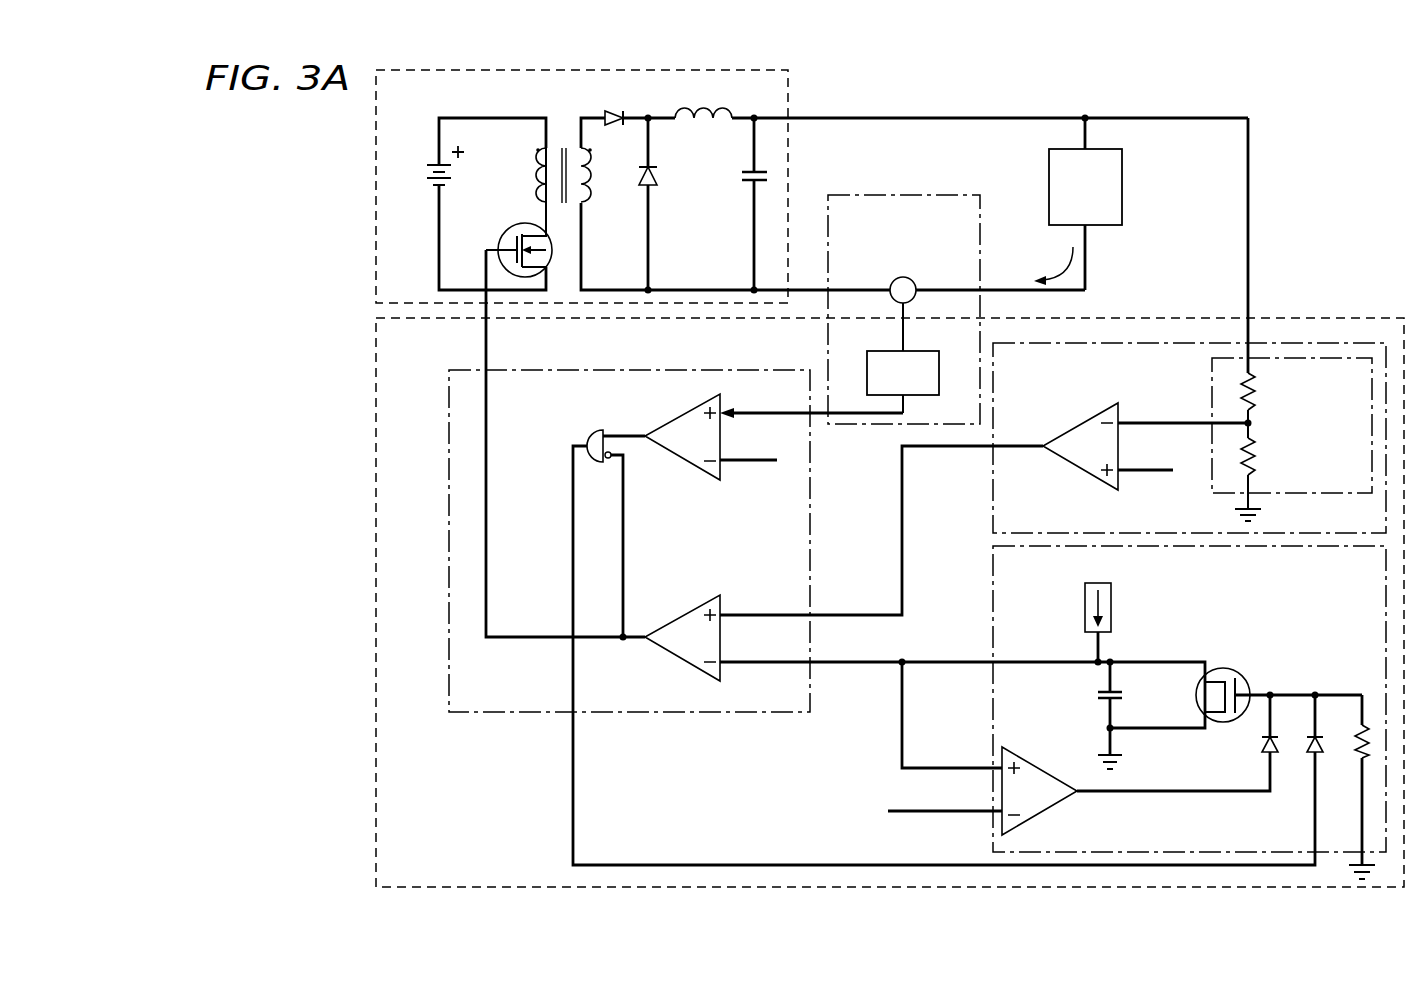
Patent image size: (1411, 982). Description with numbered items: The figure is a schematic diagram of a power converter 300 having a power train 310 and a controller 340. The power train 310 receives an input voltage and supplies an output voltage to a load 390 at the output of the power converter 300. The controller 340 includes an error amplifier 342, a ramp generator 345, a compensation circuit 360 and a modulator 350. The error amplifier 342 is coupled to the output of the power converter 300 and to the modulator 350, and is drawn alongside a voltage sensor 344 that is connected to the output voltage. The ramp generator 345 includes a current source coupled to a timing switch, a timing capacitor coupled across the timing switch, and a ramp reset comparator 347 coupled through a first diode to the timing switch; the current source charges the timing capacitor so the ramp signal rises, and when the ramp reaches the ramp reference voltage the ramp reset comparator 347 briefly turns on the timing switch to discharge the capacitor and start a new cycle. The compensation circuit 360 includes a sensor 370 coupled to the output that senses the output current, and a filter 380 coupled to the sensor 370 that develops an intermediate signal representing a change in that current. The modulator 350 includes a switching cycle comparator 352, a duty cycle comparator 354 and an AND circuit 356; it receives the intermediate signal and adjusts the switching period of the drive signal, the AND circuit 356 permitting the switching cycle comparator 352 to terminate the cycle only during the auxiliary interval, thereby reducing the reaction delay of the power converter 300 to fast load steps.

The power converter 300 is at (319, 152).
The power train 310 is at (789, 92).
The controller 340 is at (375, 858).
The error amplifier 342 is at (1040, 344).
The voltage sensor 344 is at (1345, 494).
The ramp generator 345 is at (993, 563).
The ramp reset comparator 347 is at (1027, 748).
The modulator 350 is at (449, 690).
The switching cycle comparator 352 is at (684, 464).
The duty cycle comparator 354 is at (687, 605).
The AND circuit 356 is at (595, 432).
The compensation circuit 360 is at (950, 195).
The sensor 370 is at (912, 282).
The filter 380 is at (937, 350).
The load 390 is at (1123, 184).